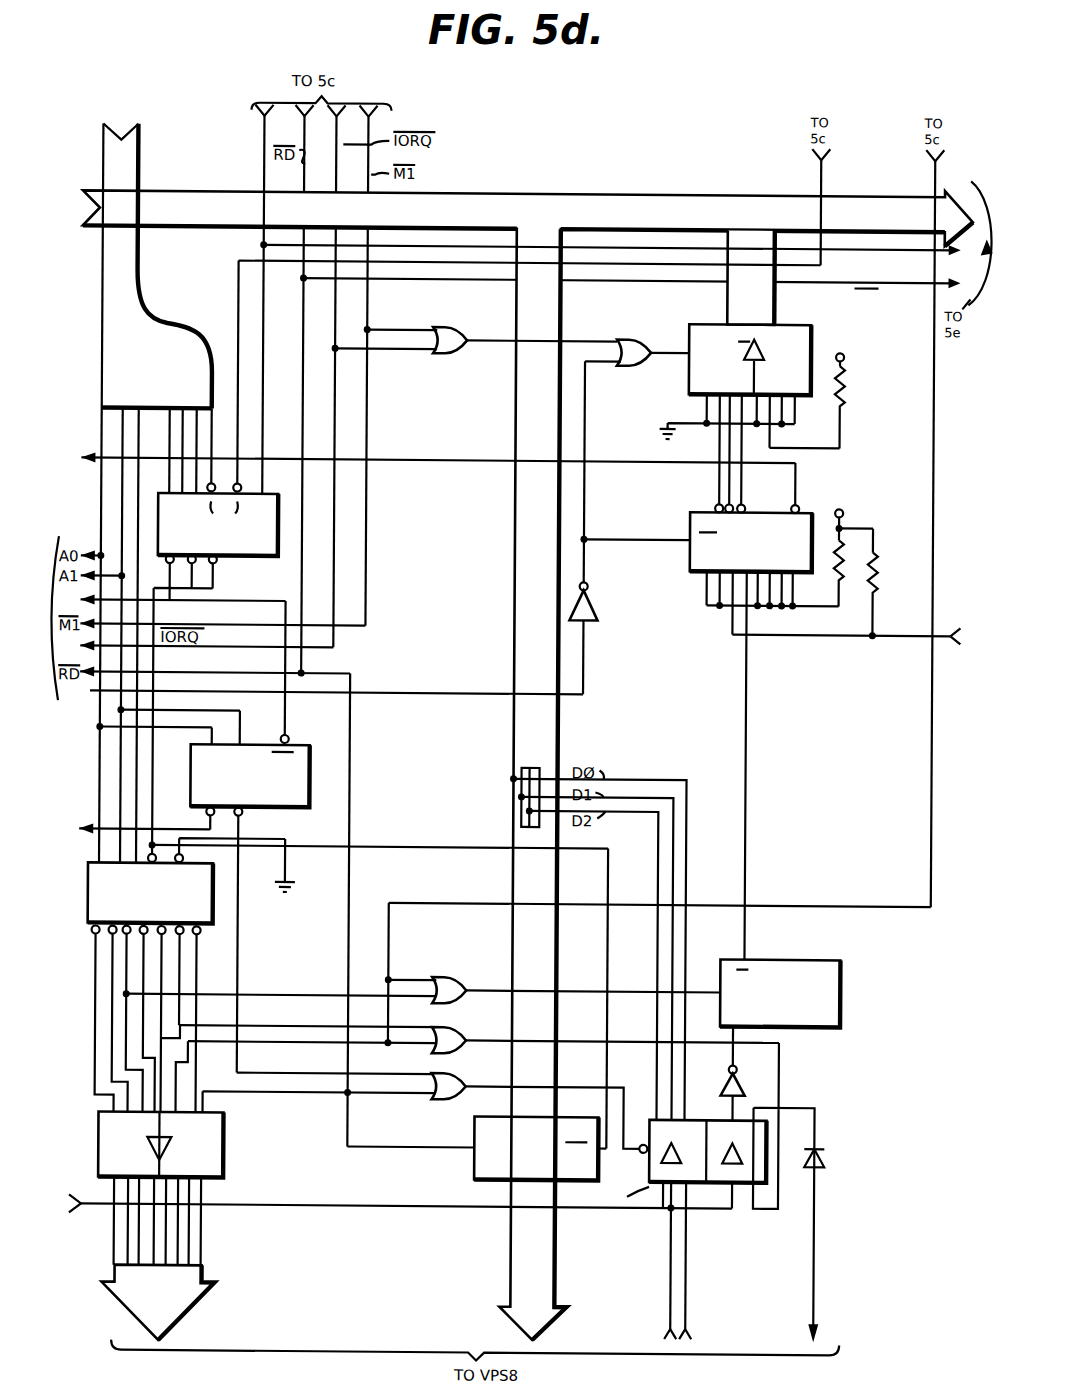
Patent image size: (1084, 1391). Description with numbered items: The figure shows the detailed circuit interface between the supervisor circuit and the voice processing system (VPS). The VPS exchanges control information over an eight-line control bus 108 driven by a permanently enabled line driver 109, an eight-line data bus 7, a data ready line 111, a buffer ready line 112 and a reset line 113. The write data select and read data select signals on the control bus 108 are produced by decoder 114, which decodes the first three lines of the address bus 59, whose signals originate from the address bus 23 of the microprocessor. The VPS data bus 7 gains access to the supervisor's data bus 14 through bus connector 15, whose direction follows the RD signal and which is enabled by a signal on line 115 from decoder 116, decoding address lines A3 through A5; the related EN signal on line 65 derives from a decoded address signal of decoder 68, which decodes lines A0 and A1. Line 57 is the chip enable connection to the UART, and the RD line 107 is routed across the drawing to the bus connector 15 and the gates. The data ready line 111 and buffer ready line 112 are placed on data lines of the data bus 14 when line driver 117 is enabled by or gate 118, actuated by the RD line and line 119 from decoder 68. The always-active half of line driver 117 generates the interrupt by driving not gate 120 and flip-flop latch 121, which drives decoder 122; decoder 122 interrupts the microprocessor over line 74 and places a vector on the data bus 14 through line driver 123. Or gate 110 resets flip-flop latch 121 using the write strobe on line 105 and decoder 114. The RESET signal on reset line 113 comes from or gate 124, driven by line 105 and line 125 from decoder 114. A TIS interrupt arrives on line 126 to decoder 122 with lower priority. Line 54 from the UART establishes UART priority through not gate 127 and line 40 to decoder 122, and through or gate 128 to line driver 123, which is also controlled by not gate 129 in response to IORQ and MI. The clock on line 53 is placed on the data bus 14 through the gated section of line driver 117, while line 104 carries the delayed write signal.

The data bus 7 is at (512, 1240).
The data bus 14 is at (92, 194).
The bus connector 15 is at (470, 1160).
The address bus 23 is at (86, 150).
The line 40 is at (586, 566).
The line 53 is at (98, 1210).
The line 54 is at (420, 694).
The line 57 is at (172, 662).
The address bus 59 is at (136, 160).
The line 65 is at (90, 826).
The decoder 68 is at (312, 772).
The line 74 is at (84, 455).
The line 104 is at (818, 182).
The line 105 is at (932, 182).
The read line 107 is at (262, 148).
The control bus 108 is at (205, 1302).
The line driver 109 is at (220, 1152).
The or gate 110 is at (446, 980).
The data ready line 111 is at (670, 1240).
The buffer ready line 112 is at (690, 1240).
The reset line 113 is at (817, 1238).
The decoder 114 is at (212, 906).
The line 115 is at (216, 588).
The decoder 116 is at (250, 562).
The line driver 117 is at (776, 1134).
The or gate 118 is at (446, 1080).
The line 119 is at (242, 832).
The not gate 120 is at (742, 1088).
The flip-flop latch 121 is at (846, 1010).
The decoder 122 is at (690, 522).
The line driver 123 is at (804, 338).
The or gate 124 is at (446, 1034).
The line 125 is at (284, 996).
The line 126 is at (902, 634).
The not gate 127 is at (590, 622).
The or gate 128 is at (627, 338).
The not gate 129 is at (447, 330).